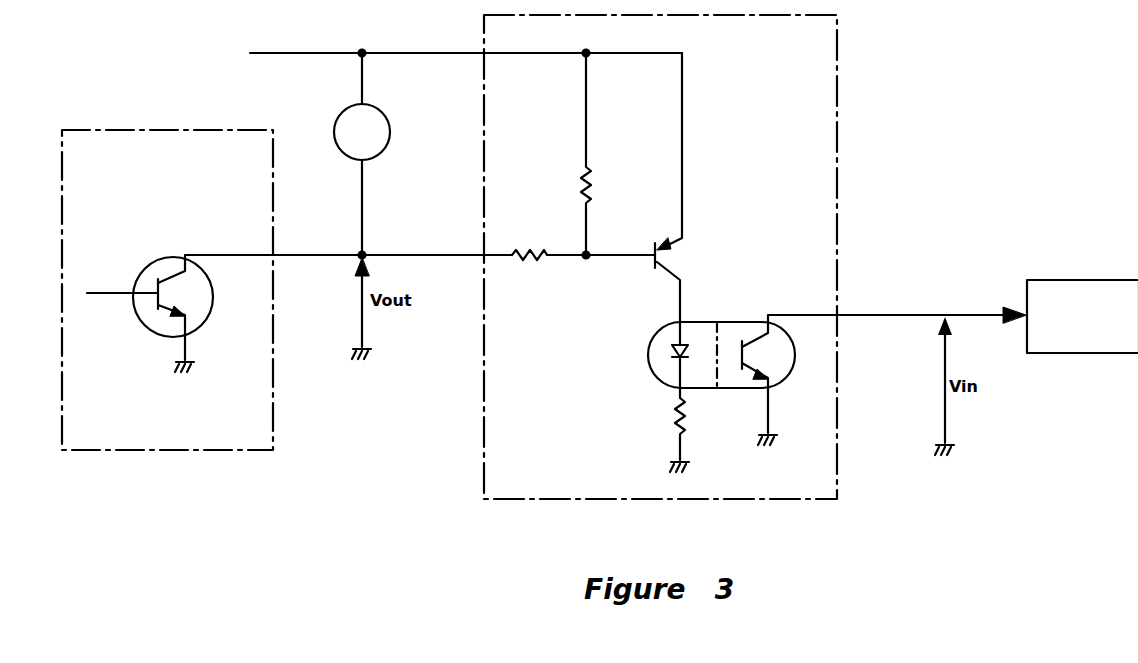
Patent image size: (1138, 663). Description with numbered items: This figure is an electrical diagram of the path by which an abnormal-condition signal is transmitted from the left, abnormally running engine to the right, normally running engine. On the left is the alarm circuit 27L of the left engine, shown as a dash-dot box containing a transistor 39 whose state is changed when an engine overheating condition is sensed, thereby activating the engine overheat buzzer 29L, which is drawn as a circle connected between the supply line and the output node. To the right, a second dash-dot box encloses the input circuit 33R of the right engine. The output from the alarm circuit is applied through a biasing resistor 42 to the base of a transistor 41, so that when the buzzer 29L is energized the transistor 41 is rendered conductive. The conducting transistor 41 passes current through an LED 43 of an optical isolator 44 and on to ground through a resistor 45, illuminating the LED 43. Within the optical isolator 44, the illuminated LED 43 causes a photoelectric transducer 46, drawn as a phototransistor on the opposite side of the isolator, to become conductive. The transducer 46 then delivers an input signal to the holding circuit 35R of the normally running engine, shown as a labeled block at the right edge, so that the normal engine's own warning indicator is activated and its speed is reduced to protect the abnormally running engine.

The alarm circuit 27L is at (140, 130).
The transistor 39 is at (155, 282).
The engine overheat buzzer 29L is at (390, 132).
The input circuit 33R is at (605, 500).
The biasing resistor 42 is at (541, 252).
The transistor 41 is at (672, 270).
The LED 43 is at (668, 350).
The optical isolator 44 is at (660, 380).
The resistor 45 is at (675, 418).
The photoelectric transducer 46 is at (747, 340).
The holding circuit 35R is at (1065, 280).